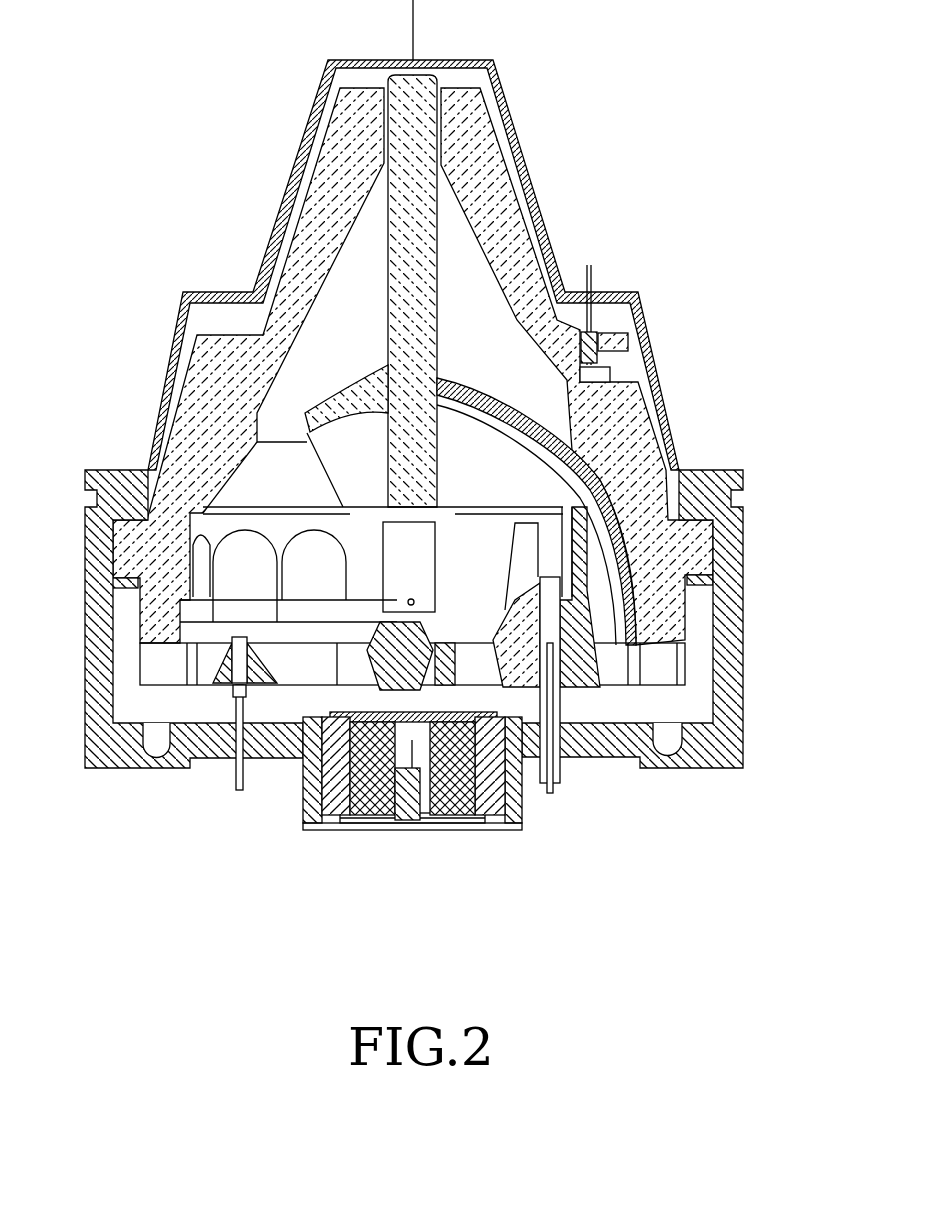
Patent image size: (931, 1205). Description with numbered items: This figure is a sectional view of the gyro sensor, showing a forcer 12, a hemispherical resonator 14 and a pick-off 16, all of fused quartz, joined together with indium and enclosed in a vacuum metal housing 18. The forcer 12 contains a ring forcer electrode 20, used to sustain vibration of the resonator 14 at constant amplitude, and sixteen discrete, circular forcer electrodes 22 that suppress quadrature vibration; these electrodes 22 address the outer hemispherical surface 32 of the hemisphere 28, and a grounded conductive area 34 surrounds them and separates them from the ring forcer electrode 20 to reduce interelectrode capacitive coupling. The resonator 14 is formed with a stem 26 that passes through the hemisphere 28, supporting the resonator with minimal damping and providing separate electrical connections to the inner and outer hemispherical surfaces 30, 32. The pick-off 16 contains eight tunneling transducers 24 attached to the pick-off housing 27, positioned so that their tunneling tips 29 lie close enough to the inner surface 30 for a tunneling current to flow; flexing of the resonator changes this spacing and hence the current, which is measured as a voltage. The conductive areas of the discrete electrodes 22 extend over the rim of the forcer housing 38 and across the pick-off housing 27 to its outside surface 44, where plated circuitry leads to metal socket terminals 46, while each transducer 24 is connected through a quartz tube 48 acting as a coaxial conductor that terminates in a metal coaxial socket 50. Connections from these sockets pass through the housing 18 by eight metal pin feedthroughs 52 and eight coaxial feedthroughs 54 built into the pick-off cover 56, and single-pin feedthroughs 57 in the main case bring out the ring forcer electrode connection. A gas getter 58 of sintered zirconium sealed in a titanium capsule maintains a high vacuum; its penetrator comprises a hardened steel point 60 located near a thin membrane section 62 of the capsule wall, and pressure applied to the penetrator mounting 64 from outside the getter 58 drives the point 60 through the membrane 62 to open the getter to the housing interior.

The forcer 12 is at (255, 322).
The hemispherical resonator 14 is at (415, 78).
The pick-off 16 is at (690, 680).
The vacuum metal housing 18 is at (272, 225).
The ring forcer electrode 20 is at (270, 460).
The discrete forcer electrodes 22 is at (260, 553).
The tunneling transducers 24 is at (423, 540).
The resonator stem 26 is at (417, 208).
The pick-off housing 27 is at (582, 562).
The hemisphere 28 is at (517, 423).
The tunneling tips 29 is at (388, 567).
The inner hemispherical surface 30 is at (540, 440).
The outer hemispherical surface 32 is at (490, 398).
The conductive area 34 is at (227, 533).
The forcer housing 38 is at (478, 122).
The outside surface of the pick-off housing 44 is at (687, 658).
The metal socket terminals 46 is at (237, 687).
The quartz tube 48 is at (563, 657).
The metal coaxial socket 50 is at (510, 690).
The metal pin feedthroughs 52 is at (237, 790).
The coaxial feedthroughs 54 is at (557, 780).
The pick-off cover 56 is at (723, 747).
The single-pin feedthroughs 57 is at (588, 268).
The gas getter 58 is at (477, 803).
The hardened steel point 60 is at (363, 803).
The thin membrane section 62 is at (430, 715).
The penetrator mounting 64 is at (405, 805).